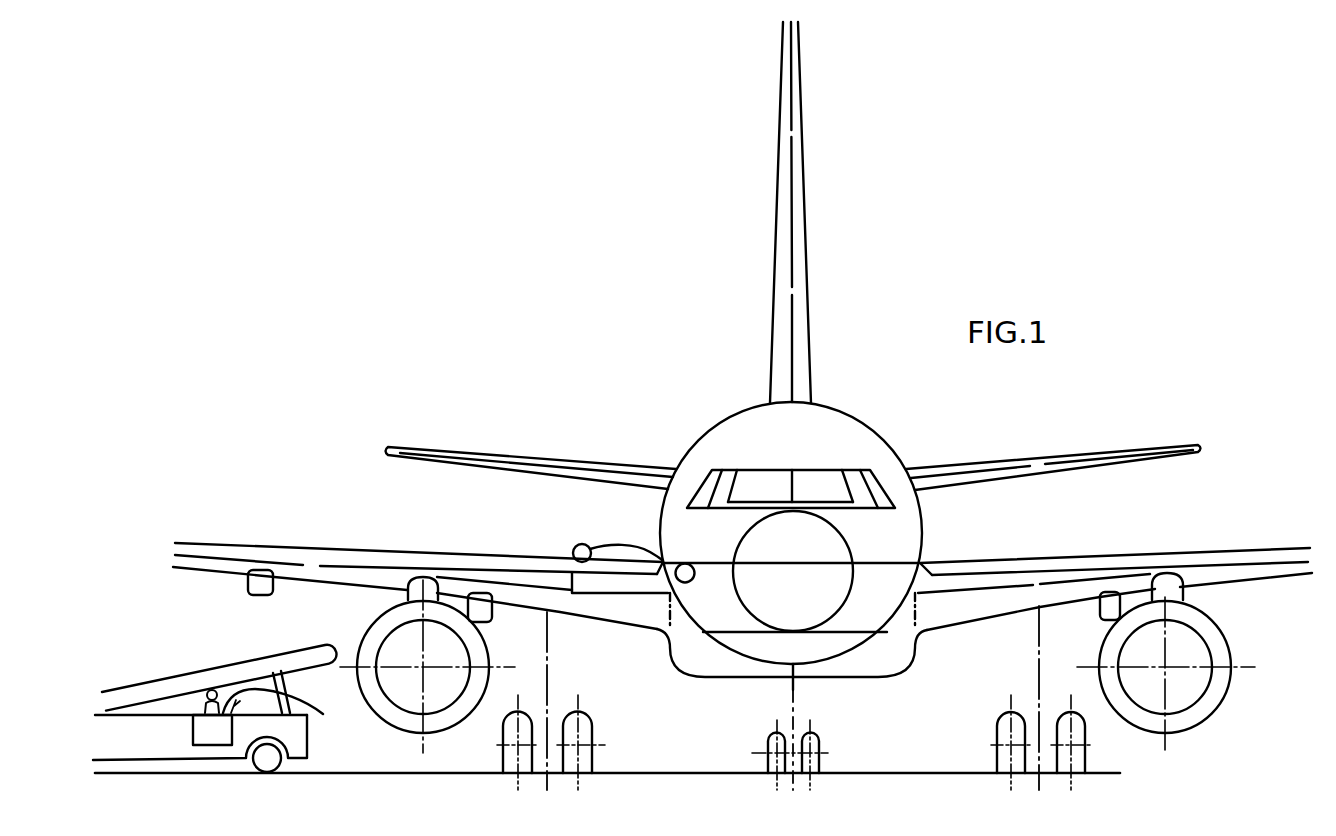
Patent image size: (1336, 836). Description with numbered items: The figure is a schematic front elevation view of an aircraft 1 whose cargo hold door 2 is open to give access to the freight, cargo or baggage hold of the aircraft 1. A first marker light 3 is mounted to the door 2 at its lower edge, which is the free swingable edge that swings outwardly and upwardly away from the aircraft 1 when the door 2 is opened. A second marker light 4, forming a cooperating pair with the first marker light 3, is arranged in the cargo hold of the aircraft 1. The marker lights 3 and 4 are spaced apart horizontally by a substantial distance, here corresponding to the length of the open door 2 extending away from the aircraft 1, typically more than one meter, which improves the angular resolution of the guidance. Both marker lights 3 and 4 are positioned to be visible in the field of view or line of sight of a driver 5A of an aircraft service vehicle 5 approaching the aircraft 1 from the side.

The aircraft 1 is at (860, 433).
The cargo hold door 2 is at (612, 545).
The first marker light 3 is at (580, 528).
The second marker light 4 is at (681, 547).
The aircraft service vehicle 5 is at (142, 730).
The driver 5A is at (278, 712).